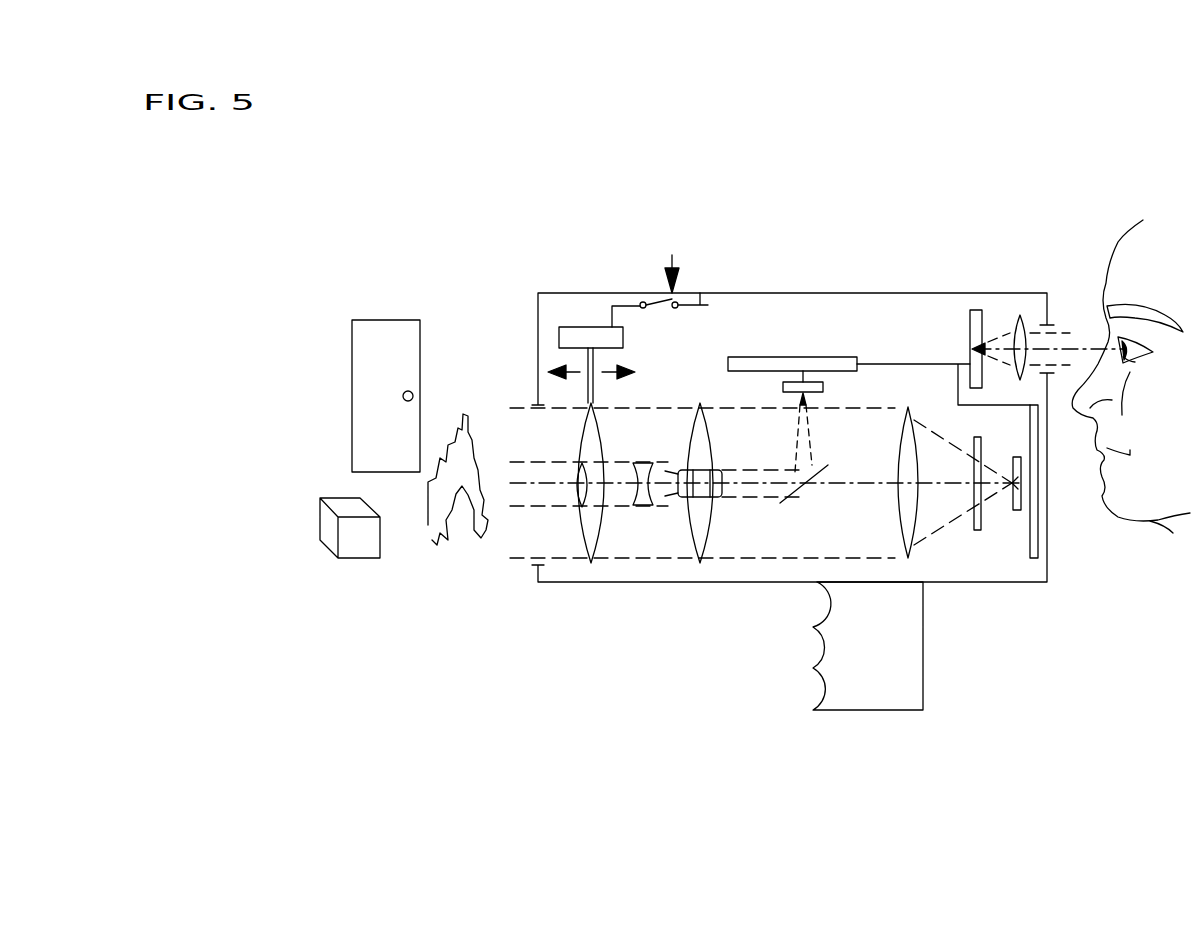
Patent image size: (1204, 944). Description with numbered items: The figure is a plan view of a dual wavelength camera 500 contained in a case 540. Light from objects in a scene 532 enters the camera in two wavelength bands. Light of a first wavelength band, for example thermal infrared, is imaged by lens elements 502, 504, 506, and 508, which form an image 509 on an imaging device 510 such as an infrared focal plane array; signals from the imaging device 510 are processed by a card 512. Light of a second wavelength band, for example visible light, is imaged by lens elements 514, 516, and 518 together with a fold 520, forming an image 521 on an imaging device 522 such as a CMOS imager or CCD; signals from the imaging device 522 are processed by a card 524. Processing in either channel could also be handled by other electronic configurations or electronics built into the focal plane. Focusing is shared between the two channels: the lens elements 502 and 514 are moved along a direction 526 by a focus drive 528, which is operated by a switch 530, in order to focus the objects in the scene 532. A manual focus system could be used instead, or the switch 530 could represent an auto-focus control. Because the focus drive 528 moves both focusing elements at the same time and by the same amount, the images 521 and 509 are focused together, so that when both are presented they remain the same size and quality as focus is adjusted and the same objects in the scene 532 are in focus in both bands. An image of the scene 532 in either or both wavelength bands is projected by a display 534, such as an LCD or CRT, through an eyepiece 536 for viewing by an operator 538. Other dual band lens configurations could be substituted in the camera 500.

The camera 500 is at (835, 160).
The lens element 502 is at (597, 525).
The lens element 504 is at (705, 531).
The lens element 506 is at (903, 500).
The lens element 508 is at (977, 531).
The image 509 is at (1012, 476).
The imaging device 510 is at (1014, 513).
The card 512 is at (1043, 535).
The lens element 514 is at (577, 474).
The lens element 516 is at (633, 463).
The lens element 518 is at (700, 470).
The fold 520 is at (822, 468).
The image 521 is at (783, 387).
The imaging device 522 is at (823, 387).
The card 524 is at (780, 357).
The direction 526 is at (605, 368).
The focus drive 528 is at (580, 327).
The switch 530 is at (698, 300).
The scene 532 is at (490, 574).
The display 534 is at (970, 327).
The eyepiece 536 is at (1018, 308).
The operator 538 is at (1118, 242).
The case 540 is at (823, 293).